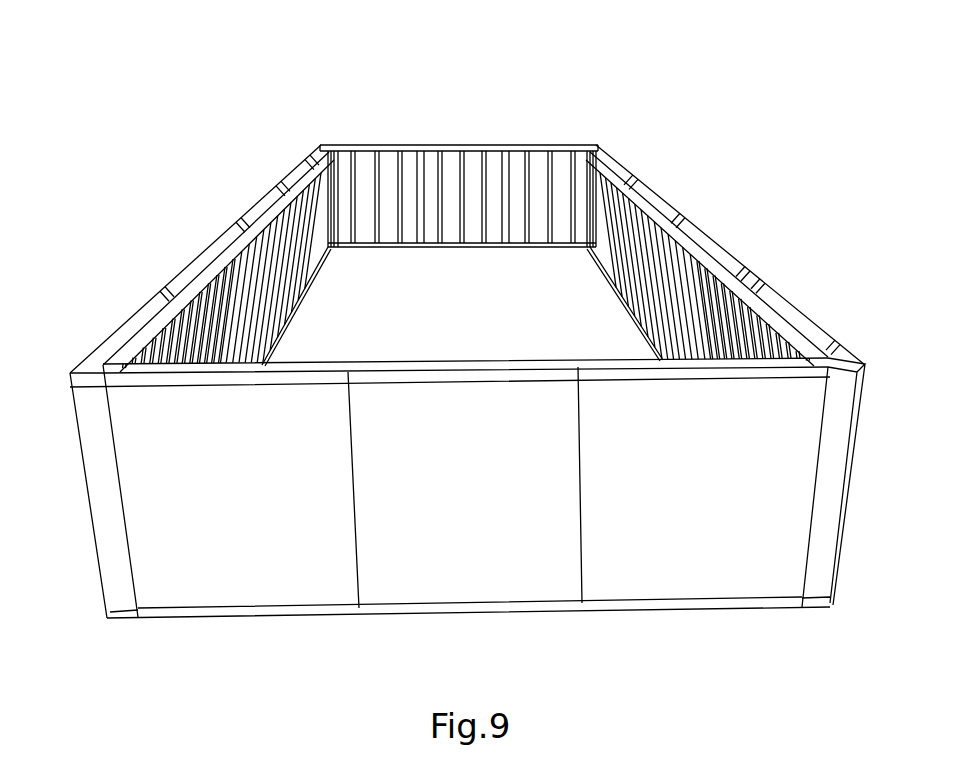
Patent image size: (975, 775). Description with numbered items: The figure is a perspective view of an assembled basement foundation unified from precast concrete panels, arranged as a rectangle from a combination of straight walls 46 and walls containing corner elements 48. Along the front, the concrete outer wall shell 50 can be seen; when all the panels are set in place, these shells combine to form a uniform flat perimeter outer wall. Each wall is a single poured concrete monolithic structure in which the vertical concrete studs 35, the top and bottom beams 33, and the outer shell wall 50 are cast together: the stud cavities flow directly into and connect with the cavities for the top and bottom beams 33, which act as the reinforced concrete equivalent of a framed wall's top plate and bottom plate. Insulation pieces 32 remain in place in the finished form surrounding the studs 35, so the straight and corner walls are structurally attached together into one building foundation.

The insulation piece 32 is at (472, 165).
The top and bottom beams 33 is at (747, 263).
The vertical concrete stud 35 is at (530, 177).
The straight wall 46 is at (185, 268).
The corner element 48 is at (848, 360).
The outer shell wall 50 is at (233, 505).